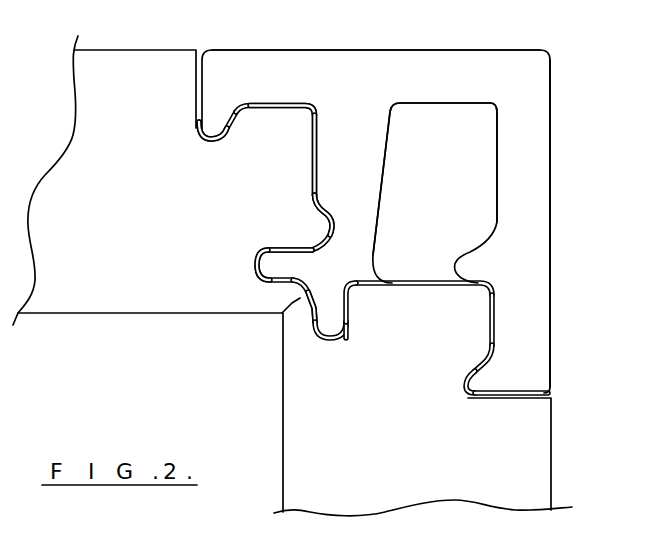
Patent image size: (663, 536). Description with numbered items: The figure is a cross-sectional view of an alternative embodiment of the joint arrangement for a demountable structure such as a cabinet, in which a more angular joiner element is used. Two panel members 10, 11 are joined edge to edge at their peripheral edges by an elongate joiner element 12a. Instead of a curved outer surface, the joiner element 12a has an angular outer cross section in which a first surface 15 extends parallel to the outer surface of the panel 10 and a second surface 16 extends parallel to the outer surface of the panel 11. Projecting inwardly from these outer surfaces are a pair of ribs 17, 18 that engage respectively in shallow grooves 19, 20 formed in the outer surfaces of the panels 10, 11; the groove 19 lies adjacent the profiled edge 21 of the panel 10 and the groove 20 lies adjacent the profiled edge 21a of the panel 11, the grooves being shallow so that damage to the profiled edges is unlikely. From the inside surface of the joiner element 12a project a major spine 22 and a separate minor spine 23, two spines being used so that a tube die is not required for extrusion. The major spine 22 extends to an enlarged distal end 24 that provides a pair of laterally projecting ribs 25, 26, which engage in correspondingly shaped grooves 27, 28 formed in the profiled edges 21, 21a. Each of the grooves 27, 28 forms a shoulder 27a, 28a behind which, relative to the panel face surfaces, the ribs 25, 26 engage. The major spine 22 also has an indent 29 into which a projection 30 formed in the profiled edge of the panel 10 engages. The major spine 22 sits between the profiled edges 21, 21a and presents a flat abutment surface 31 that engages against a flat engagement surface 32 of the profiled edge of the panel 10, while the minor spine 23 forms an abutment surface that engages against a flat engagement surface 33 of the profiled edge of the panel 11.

The panel member 10 is at (78, 302).
The panel member 11 is at (533, 443).
The elongate joiner element 12a is at (551, 75).
The first surface 15 is at (445, 50).
The second surface 16 is at (552, 177).
The rib 17 is at (213, 118).
The rib 18 is at (470, 382).
The groove 19 is at (200, 132).
The groove 20 is at (463, 378).
The profiled edge 21 is at (298, 122).
The profiled edge 21a is at (478, 334).
The major spine 22 is at (346, 255).
The minor spine 23 is at (474, 240).
The enlarged distal end 24 is at (303, 287).
The rib 25 is at (270, 269).
The rib 26 is at (328, 330).
The groove 27 is at (262, 252).
The shoulder 27a is at (293, 247).
The groove 28 is at (350, 330).
The shoulder 28a is at (310, 310).
The indent 29 is at (333, 217).
The projection 30 is at (313, 228).
The abutment surface 31 is at (318, 133).
The engagement surface 32 is at (311, 151).
The engagement surface 33 is at (425, 280).